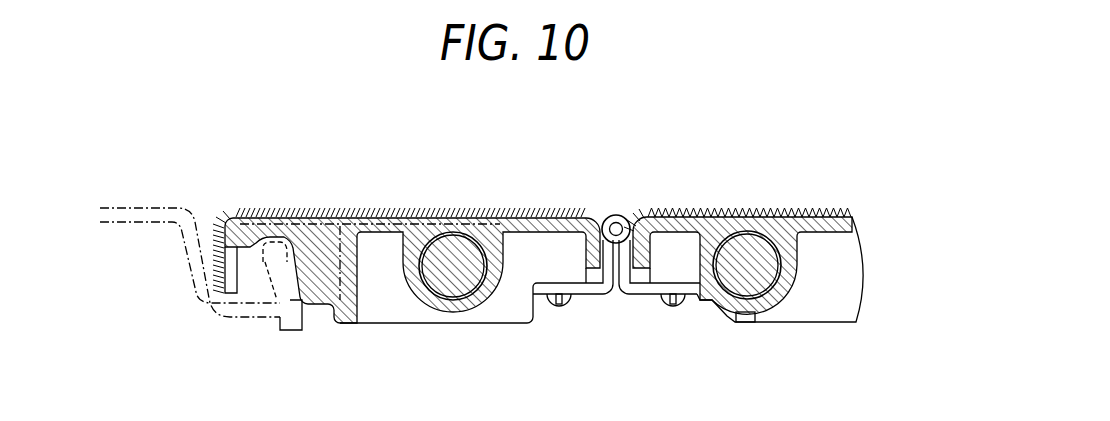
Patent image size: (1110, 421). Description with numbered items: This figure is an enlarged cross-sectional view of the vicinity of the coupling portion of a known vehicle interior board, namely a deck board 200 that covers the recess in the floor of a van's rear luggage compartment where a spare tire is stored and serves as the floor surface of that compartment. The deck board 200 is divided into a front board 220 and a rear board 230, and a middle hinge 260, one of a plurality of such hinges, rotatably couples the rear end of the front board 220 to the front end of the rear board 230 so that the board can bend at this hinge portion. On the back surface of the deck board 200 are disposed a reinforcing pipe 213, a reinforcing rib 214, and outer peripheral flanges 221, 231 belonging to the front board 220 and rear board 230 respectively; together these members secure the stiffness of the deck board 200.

The deck board 200 is at (829, 145).
The front board 220 is at (375, 203).
The rear board 230 is at (713, 198).
The middle hinge 260 is at (616, 214).
The outer peripheral flange 221 is at (583, 260).
The outer peripheral flange 231 is at (654, 260).
The reinforcing pipe 213 is at (467, 312).
The reinforcing rib 214 is at (402, 324).